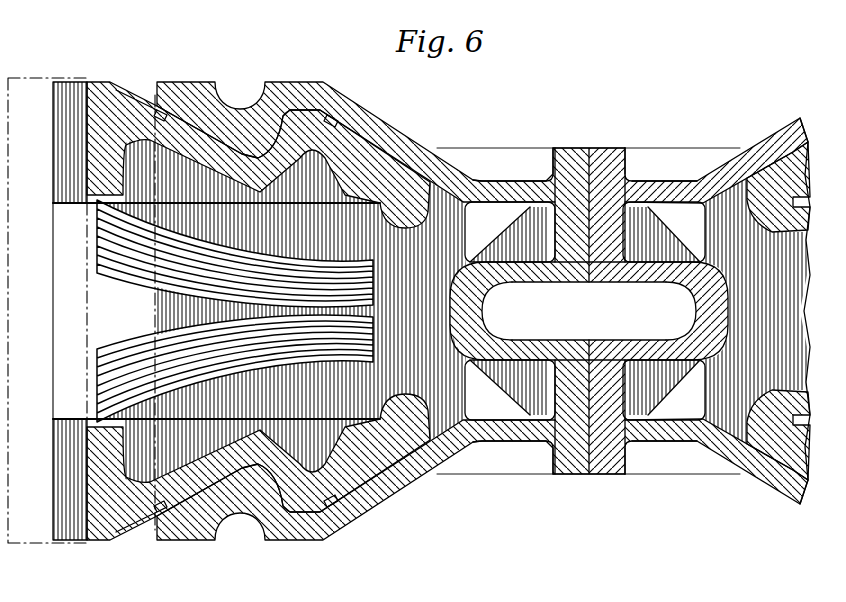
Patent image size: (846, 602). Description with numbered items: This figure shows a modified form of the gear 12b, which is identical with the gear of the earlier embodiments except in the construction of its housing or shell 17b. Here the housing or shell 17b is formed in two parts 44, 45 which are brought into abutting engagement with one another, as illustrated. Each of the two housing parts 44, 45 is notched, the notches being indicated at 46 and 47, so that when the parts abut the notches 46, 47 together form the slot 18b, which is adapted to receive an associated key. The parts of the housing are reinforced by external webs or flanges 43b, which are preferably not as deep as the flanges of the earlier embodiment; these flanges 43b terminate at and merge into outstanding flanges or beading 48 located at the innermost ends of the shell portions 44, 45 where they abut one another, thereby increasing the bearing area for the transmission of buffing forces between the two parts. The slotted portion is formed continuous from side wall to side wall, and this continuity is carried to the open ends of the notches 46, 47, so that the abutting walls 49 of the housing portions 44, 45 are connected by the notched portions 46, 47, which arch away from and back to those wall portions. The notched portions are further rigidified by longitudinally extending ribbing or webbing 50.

The gear 12b is at (437, 148).
The housing or shell 17b is at (740, 160).
The slot 18b is at (589, 311).
The external webs or flanges 43b is at (638, 150).
The housing part 44 is at (293, 541).
The housing part 45 is at (784, 503).
The notch 46 is at (485, 323).
The notch 47 is at (690, 306).
The outstanding flanges or beading 48 is at (604, 148).
The abutting walls 49 is at (592, 250).
The longitudinally extending ribbing or webbing 50 is at (537, 207).